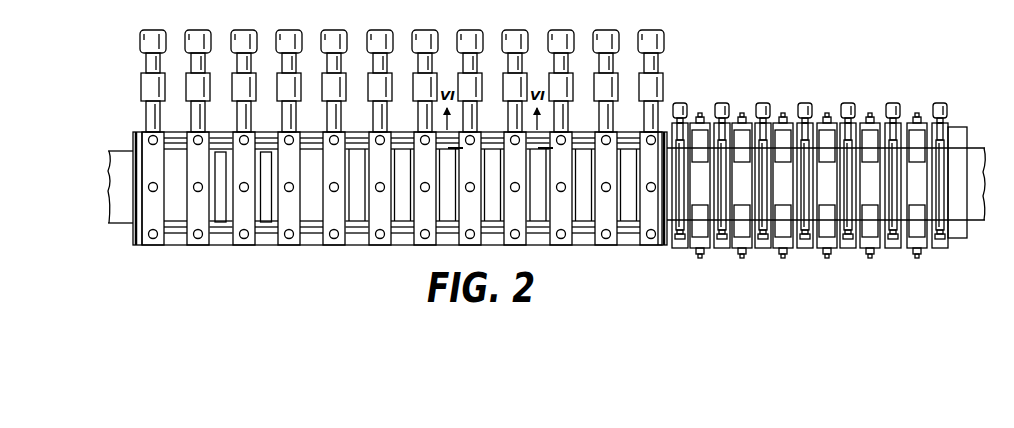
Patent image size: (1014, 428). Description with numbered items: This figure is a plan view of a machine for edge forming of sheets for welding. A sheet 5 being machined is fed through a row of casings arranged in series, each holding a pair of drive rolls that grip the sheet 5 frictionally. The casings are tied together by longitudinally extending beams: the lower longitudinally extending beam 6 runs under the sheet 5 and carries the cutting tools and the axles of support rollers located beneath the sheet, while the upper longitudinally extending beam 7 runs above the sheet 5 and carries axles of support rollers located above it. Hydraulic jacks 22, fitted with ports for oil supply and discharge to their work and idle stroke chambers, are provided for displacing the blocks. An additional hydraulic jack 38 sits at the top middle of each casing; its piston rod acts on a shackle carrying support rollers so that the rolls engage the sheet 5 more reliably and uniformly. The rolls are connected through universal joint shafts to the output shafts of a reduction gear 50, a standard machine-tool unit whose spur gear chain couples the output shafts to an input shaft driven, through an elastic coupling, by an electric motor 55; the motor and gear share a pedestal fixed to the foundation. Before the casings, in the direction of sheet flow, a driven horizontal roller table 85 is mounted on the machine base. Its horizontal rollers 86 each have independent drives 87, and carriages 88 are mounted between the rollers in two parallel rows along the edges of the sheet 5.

The sheet 5 is at (118, 212).
The lower longitudinally extending beam 6 is at (180, 130).
The upper longitudinally extending beam 7 is at (176, 153).
The hydraulic jack 22 is at (247, 136).
The additional hydraulic jack 38 is at (294, 187).
The reduction gear 50 is at (148, 88).
The electric motor 55 is at (146, 42).
The driven horizontal roller table 85 is at (817, 253).
The horizontal rollers 86 is at (946, 143).
The independent drives 87 is at (946, 112).
The carriages 88 is at (912, 133).